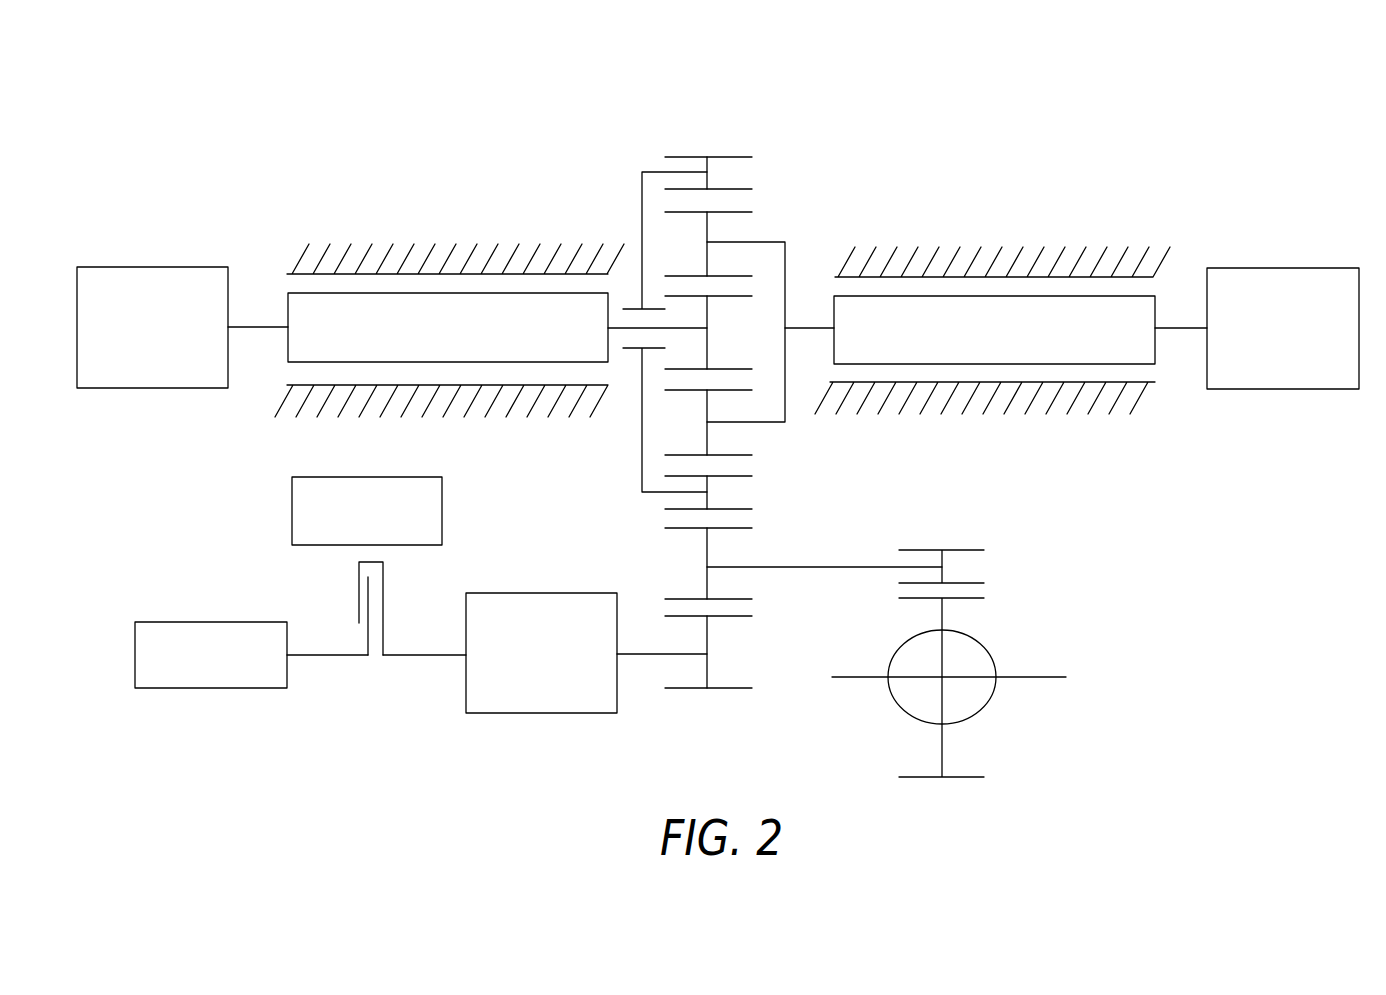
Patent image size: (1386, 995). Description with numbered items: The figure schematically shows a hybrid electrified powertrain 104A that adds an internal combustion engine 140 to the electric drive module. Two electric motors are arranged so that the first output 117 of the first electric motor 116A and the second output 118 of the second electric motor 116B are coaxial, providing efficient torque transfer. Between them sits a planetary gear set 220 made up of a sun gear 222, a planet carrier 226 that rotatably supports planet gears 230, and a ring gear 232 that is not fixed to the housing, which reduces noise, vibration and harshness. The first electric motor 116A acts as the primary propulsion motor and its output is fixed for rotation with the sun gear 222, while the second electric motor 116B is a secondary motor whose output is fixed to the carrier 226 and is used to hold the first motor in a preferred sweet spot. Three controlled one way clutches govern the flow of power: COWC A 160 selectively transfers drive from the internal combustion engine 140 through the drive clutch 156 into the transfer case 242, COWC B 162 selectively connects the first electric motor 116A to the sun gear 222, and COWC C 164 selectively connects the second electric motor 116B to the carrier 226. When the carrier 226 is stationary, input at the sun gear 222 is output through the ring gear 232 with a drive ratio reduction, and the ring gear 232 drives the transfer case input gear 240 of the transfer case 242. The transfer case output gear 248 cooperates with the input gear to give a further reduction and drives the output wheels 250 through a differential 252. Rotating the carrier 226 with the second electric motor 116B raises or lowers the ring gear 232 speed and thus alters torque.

The hybrid electrified powertrain 104A is at (1067, 116).
The first electric motor 116A is at (355, 312).
The second electric motor 116B is at (1077, 313).
The first output 117 is at (637, 328).
The second output 118 is at (810, 328).
The internal combustion engine 140 is at (188, 688).
The drive clutch 156 is at (442, 513).
The controlled one way clutch A 160 is at (587, 713).
The controlled one way clutch B 162 is at (138, 267).
The controlled one way clutch C 164 is at (1283, 268).
The planetary gear set 220 is at (699, 104).
The sun gear 222 is at (708, 356).
The planet carrier 226 is at (785, 242).
The planet gears 230 is at (707, 223).
The ring gear 232 is at (707, 182).
The transfer case input gear 240 is at (705, 548).
The transfer case 242 is at (818, 516).
The transfer case output gear 248 is at (962, 550).
The output wheels 250 is at (1088, 627).
The differential 252 is at (992, 690).